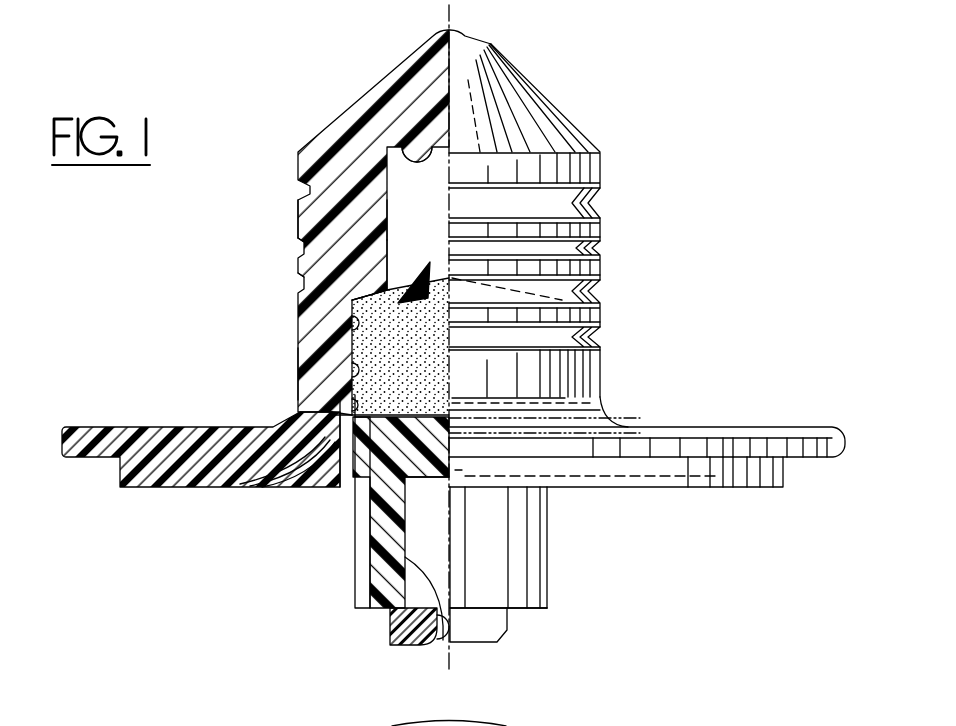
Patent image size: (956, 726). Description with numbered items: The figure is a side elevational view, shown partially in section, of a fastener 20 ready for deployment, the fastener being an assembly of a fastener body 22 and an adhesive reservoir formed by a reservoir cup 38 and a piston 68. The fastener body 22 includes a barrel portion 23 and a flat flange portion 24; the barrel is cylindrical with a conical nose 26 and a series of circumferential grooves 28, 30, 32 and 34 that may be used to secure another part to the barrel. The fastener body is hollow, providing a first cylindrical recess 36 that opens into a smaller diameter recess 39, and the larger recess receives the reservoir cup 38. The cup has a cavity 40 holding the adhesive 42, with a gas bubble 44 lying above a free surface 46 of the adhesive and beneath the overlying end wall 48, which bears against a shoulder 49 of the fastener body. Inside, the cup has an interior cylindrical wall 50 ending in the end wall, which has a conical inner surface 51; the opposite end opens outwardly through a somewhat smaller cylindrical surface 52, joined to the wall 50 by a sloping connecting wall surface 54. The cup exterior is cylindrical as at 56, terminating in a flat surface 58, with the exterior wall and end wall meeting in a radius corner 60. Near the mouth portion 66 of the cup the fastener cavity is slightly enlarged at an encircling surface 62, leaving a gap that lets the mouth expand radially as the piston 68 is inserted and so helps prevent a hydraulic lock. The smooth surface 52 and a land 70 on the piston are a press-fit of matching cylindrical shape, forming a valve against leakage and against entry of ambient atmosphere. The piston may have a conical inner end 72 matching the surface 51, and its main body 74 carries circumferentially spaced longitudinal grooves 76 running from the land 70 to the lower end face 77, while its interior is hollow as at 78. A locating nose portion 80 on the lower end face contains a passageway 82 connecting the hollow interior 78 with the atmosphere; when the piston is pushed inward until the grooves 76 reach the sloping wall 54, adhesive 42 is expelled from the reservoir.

The sealing plug 20 is at (586, 201).
The fastener body 22 is at (590, 130).
The barrel portion 23 is at (600, 382).
The flange portion 24 is at (792, 425).
The conical nose 26 is at (492, 54).
The circumferential groove 28 is at (594, 202).
The circumferential groove 30 is at (594, 248).
The circumferential groove 32 is at (594, 292).
The circumferential groove 34 is at (594, 336).
The first cylindrical recess 36 is at (345, 336).
The reservoir cup 38 is at (330, 345).
The smaller diameter recess 39 is at (413, 150).
The cavity 40 is at (343, 376).
The adhesive 42 is at (386, 361).
The gas bubble 44 is at (395, 268).
The free surface 46 is at (415, 262).
The end wall 48 is at (355, 258).
The shoulder 49 is at (338, 272).
The interior cylindrical wall 50 is at (305, 292).
The conical inner surface 51 is at (342, 290).
The cylindrical surface 52 is at (372, 505).
The sloping connecting wall surface 54 is at (336, 413).
The exterior cylindrical surface 56 is at (332, 292).
The flat surface 58 is at (440, 215).
The radius corner 60 is at (332, 250).
The enlarged surface 62 is at (262, 468).
The mouth portion 66 is at (342, 473).
The piston 68 is at (463, 545).
The land 70 is at (543, 410).
The conical inner end 72 is at (383, 418).
The main body 74 is at (537, 540).
The longitudinal grooves 76 is at (538, 512).
The lower end face 77 is at (528, 610).
The hollow interior 78 is at (437, 633).
The locating nose portion 80 is at (510, 640).
The passageway 82 is at (428, 642).